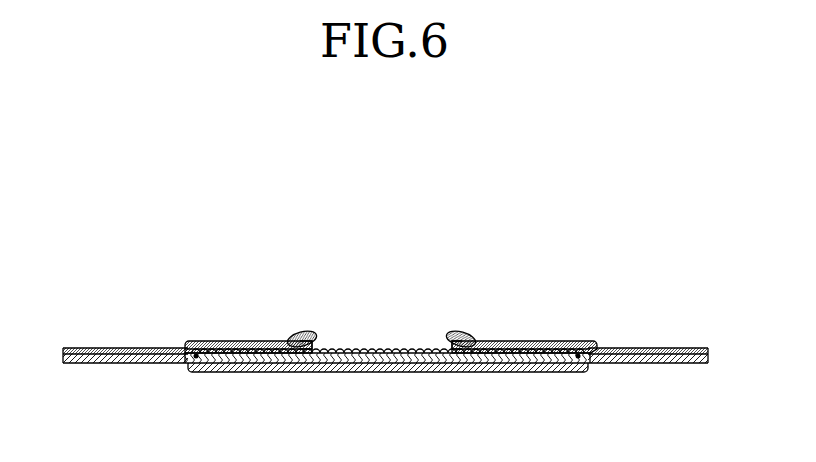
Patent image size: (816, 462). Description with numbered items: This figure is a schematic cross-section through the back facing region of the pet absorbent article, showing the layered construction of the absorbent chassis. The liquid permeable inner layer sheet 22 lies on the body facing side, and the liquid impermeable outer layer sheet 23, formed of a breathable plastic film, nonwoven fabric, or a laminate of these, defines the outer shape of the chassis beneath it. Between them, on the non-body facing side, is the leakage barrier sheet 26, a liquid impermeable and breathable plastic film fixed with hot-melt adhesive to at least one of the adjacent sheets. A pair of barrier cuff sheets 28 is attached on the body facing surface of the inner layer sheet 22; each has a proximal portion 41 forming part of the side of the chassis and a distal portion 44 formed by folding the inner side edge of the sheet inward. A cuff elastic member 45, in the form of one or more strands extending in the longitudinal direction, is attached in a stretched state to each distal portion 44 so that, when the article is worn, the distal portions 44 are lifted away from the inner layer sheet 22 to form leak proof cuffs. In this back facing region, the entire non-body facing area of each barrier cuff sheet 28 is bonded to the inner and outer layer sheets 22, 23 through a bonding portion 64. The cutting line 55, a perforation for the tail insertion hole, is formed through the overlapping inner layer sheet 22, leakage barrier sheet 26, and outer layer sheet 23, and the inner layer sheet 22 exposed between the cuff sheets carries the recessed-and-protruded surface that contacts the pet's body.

The inner layer sheet 22 is at (385, 349).
The outer layer sheet 23 is at (490, 372).
The leakage barrier sheet 26 is at (443, 372).
The barrier cuff sheet 28 is at (246, 341).
The proximal portion 41 is at (172, 348).
The distal portion 44 is at (317, 336).
The cuff elastic member 45 is at (301, 333).
The cutting line 55 is at (418, 348).
The bonding portion 64 is at (152, 363).